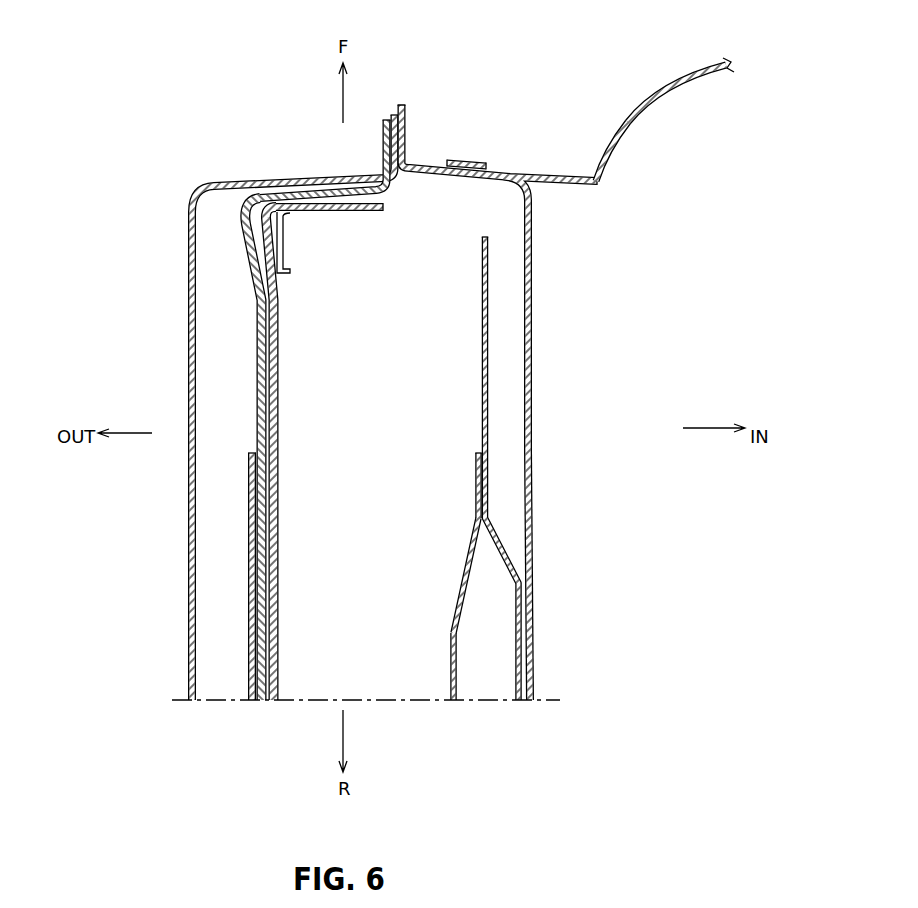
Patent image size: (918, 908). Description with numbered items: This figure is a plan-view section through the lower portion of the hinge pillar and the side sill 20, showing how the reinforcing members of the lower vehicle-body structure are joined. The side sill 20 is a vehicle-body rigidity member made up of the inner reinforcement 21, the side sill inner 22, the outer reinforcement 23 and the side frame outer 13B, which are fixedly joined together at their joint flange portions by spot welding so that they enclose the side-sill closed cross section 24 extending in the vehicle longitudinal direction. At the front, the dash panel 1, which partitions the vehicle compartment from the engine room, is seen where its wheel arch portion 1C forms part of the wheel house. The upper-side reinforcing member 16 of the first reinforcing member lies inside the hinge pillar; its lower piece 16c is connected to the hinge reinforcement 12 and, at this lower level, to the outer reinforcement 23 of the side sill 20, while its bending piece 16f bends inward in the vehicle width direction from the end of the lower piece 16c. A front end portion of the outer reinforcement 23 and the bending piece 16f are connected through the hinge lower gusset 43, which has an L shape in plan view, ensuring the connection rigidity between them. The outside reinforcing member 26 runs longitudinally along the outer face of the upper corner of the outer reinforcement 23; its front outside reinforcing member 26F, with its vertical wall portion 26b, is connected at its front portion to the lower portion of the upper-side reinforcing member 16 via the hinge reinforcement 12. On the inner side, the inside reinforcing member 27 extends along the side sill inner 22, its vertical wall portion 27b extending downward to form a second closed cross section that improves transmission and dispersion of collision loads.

The dash panel 1 is at (679, 73).
The wheel arch portion 1C is at (617, 142).
The hinge reinforcement 12 is at (250, 254).
The side frame outer 13B is at (188, 519).
The upper-side reinforcing member 16 is at (247, 312).
The lower piece 16c is at (259, 392).
The bending piece 16f is at (306, 205).
The side sill 20 is at (543, 389).
The inner reinforcement 21 is at (536, 497).
The side sill inner 22 is at (481, 344).
The outer reinforcement 23 is at (280, 634).
The side-sill closed cross section 24 is at (386, 418).
The outside reinforcing member 26 is at (238, 630).
The front outside reinforcing member 26F is at (247, 568).
The vertical wall portion 26b is at (247, 679).
The inside reinforcing member 27 is at (440, 664).
The vertical wall portion 27b is at (468, 561).
The hinge lower gusset 43 is at (357, 213).